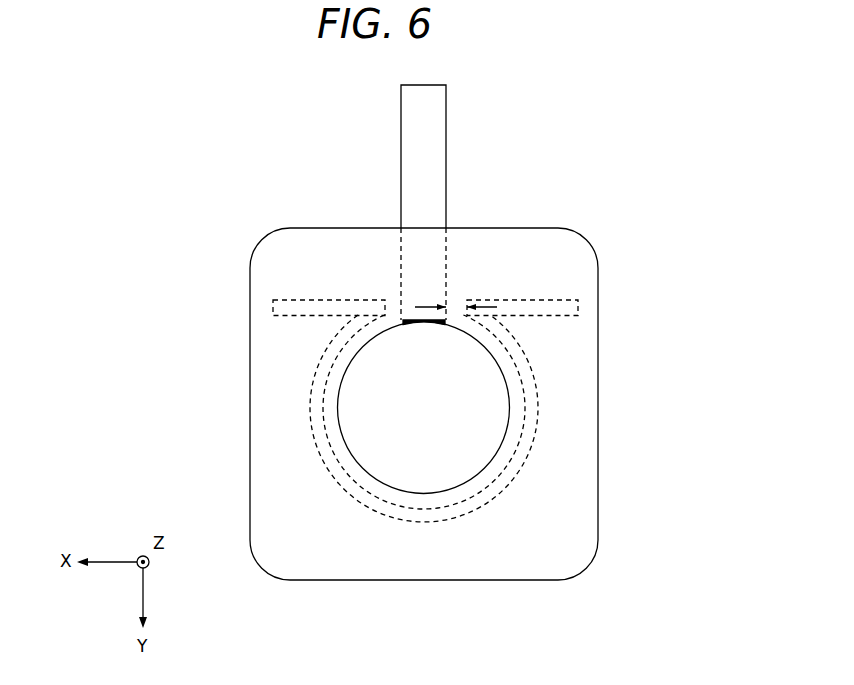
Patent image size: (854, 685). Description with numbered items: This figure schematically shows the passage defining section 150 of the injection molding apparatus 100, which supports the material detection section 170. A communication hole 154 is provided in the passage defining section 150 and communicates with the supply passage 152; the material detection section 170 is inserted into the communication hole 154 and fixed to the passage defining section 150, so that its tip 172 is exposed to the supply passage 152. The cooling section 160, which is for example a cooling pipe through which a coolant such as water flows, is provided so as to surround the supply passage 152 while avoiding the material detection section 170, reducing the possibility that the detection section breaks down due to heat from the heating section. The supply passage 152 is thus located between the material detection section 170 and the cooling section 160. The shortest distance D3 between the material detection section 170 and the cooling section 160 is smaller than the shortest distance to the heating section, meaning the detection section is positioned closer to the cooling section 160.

The imaging device / lens unit 100 is at (641, 174).
The passage defining section 150 is at (285, 266).
The supply passage 152 is at (510, 407).
The communication hole 154 is at (400, 273).
The cooling section 160 is at (315, 409).
The material detection section 170 is at (423, 160).
The tip 172 is at (424, 322).
The shortest distance D3 is at (456, 292).